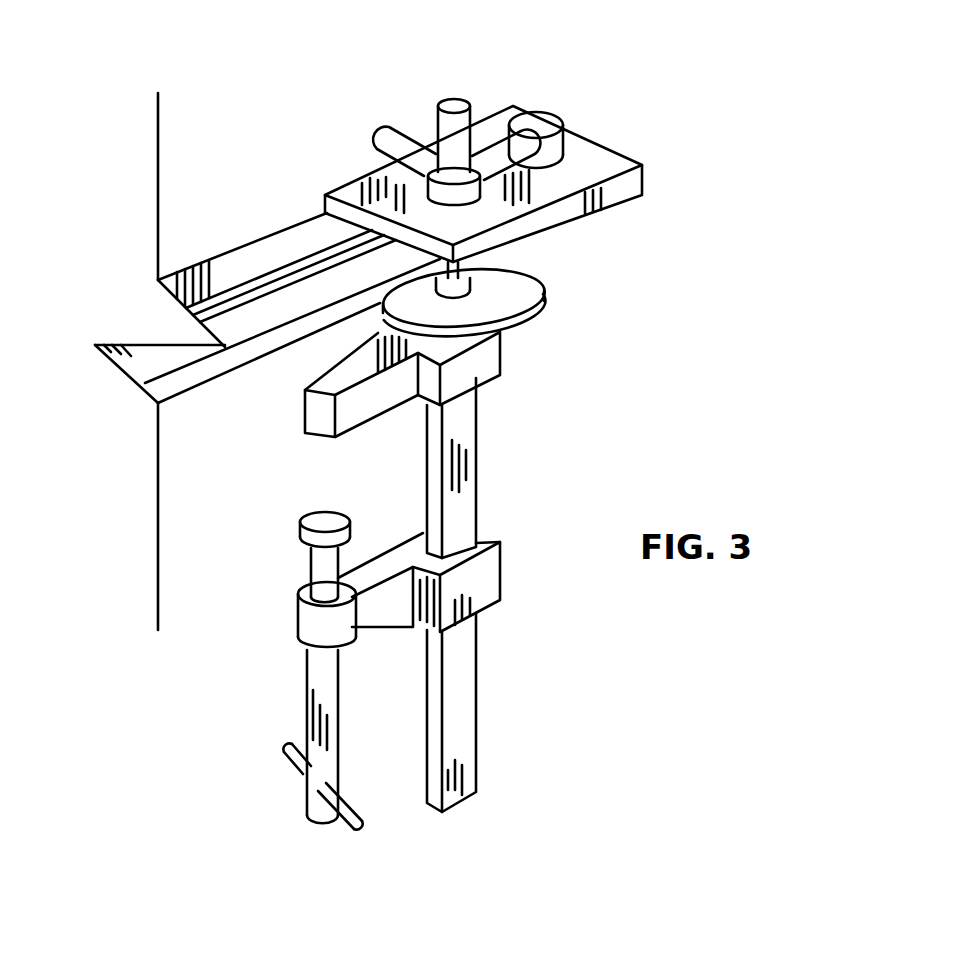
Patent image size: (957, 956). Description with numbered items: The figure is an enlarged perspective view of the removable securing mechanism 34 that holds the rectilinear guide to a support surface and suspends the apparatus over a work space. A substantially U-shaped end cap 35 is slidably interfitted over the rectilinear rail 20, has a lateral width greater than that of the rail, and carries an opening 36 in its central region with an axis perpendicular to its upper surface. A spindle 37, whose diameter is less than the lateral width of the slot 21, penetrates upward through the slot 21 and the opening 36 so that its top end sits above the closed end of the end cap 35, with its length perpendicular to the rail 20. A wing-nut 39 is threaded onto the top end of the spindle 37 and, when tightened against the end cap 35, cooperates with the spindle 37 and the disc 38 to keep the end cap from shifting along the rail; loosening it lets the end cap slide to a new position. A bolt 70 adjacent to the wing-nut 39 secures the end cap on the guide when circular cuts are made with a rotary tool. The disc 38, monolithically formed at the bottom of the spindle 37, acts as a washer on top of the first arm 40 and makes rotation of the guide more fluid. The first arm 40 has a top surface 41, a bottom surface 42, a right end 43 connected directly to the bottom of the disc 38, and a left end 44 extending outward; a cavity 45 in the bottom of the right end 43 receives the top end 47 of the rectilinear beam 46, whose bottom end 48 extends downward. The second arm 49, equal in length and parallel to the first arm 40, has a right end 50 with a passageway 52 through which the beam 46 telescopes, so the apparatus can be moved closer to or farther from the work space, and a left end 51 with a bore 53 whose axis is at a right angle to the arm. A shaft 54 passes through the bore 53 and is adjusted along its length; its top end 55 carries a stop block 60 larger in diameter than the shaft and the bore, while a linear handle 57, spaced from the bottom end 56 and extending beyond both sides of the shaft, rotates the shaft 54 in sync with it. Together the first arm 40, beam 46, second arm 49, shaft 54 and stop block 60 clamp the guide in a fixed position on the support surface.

The rectilinear rail 20 is at (204, 290).
The slot 21 is at (262, 290).
The removable securing mechanism 34 is at (762, 167).
The end cap 35 is at (595, 160).
The opening 36 is at (484, 214).
The spindle 37 is at (456, 108).
The disc 38 is at (513, 287).
The wing-nut 39 is at (426, 168).
The first arm 40 is at (307, 407).
The top surface 41 is at (347, 363).
The bottom surface 42 is at (360, 433).
The right end 43 is at (487, 353).
The left end 44 is at (318, 412).
The cavity 45 is at (462, 408).
The rectilinear beam 46 is at (470, 645).
The top end 47 is at (430, 403).
The bottom end 48 is at (470, 793).
The second arm 49 is at (490, 573).
The right end 50 is at (487, 558).
The left end 51 is at (370, 605).
The passageway 52 is at (430, 638).
The bore 53 is at (303, 657).
The shaft 54 is at (317, 685).
The top end 55 is at (308, 562).
The bottom end 56 is at (302, 822).
The linear handle 57 is at (362, 830).
The stop block 60 is at (308, 522).
The bolt 70 is at (535, 122).